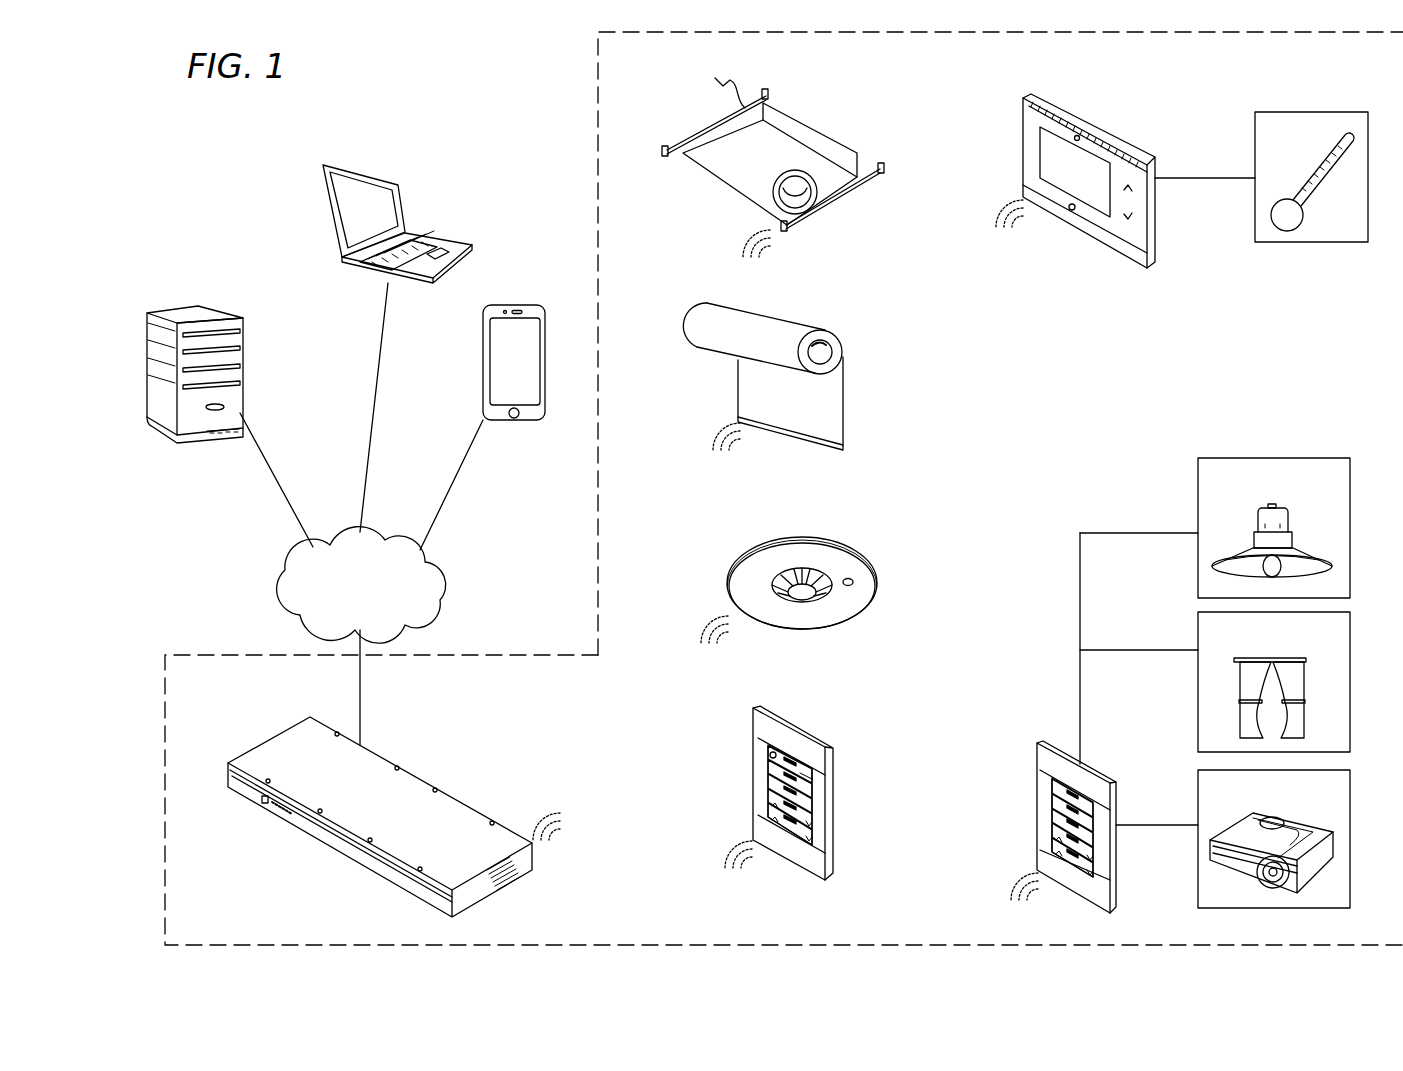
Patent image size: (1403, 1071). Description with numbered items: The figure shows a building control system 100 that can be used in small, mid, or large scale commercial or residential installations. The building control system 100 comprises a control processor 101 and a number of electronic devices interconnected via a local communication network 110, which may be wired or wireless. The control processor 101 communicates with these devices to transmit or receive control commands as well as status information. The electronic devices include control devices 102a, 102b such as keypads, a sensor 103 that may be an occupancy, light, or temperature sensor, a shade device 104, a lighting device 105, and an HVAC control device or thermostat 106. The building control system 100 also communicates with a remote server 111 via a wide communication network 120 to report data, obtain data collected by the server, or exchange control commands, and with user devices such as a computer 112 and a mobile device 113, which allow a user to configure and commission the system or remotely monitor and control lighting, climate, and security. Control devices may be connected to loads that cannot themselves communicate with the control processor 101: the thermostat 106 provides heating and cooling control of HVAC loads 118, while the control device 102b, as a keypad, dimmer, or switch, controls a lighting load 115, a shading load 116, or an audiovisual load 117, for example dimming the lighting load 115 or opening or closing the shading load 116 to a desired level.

The building control system 100 is at (499, 132).
The control processor 101 is at (458, 797).
The control device 102a is at (808, 730).
The control device 102b is at (1040, 740).
The sensor 103 is at (852, 543).
The shade device 104 is at (842, 342).
The lighting device 105 is at (833, 137).
The thermostat 106 is at (1088, 118).
The local communication network 110 is at (631, 776).
The remote server 111 is at (243, 343).
The computer 112 is at (330, 210).
The mobile device 113 is at (516, 420).
The lighting load 115 is at (1198, 493).
The shading load 116 is at (1198, 703).
The audiovisual load 117 is at (1198, 902).
The HVAC load 118 is at (1257, 160).
The network 120 is at (443, 593).